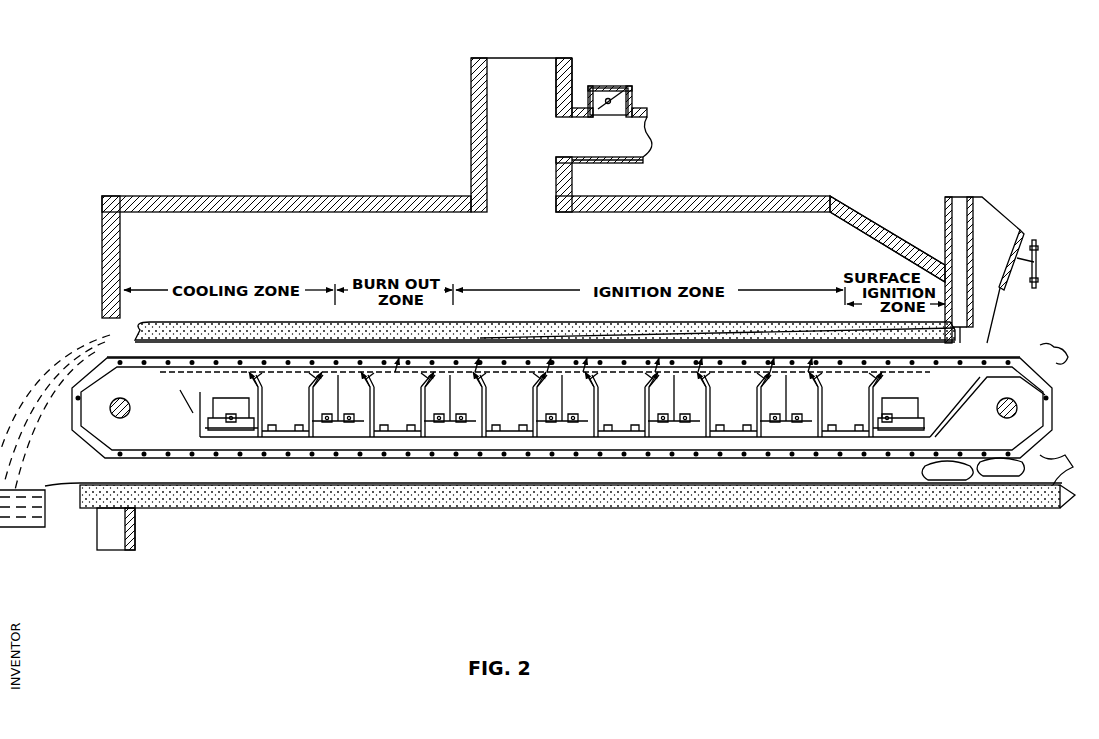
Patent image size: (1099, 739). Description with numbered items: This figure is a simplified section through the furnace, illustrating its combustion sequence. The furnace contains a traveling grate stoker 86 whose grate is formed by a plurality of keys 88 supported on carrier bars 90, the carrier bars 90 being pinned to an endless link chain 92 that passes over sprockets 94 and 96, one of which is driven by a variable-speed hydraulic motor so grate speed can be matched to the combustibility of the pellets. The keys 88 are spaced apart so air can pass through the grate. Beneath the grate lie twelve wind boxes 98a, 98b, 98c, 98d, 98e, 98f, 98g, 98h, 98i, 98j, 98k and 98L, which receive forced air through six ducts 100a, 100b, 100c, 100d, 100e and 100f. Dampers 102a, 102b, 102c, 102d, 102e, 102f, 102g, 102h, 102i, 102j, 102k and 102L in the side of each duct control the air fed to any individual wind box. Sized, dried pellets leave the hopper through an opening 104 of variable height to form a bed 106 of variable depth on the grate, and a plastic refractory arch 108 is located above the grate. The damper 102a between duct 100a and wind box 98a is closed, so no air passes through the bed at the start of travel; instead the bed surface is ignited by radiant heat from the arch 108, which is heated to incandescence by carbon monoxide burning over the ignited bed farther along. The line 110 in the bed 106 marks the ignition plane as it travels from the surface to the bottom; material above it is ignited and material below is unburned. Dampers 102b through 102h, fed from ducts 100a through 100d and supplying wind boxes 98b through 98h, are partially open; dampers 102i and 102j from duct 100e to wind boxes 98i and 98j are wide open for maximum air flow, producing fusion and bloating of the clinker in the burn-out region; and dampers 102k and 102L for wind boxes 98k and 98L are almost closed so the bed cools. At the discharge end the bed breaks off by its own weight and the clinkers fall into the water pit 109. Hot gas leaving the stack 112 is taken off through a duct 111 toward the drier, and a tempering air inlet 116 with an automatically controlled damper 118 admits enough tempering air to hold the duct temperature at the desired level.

The traveling grate stoker 86 is at (1047, 336).
The keys 88 is at (1043, 468).
The carrier bars 90 is at (1048, 440).
The endless link chain 92 is at (1035, 352).
The sprocket 94 is at (138, 433).
The sprocket 96 is at (1010, 430).
The wind box 98a is at (885, 405).
The wind box 98b is at (802, 408).
The wind box 98c is at (773, 408).
The wind box 98d is at (692, 408).
The wind box 98e is at (663, 408).
The wind box 98f is at (579, 408).
The wind box 98g is at (553, 408).
The wind box 98h is at (466, 407).
The wind box 98i is at (439, 408).
The wind box 98j is at (351, 407).
The wind box 98k is at (329, 408).
The wind box 98L is at (244, 418).
The duct 100a is at (847, 407).
The duct 100b is at (735, 407).
The duct 100c is at (623, 407).
The duct 100d is at (511, 407).
The duct 100e is at (399, 407).
The duct 100f is at (287, 407).
The damper 102a is at (874, 380).
The damper 102b is at (822, 385).
The damper 102c is at (764, 378).
The damper 102d is at (730, 370).
The damper 102e is at (652, 378).
The damper 102f is at (609, 374).
The damper 102g is at (540, 378).
The damper 102h is at (499, 375).
The damper 102i is at (428, 378).
The damper 102j is at (410, 370).
The damper 102k is at (316, 378).
The damper 102L is at (276, 382).
The opening 104 is at (975, 330).
The bed 106 is at (484, 322).
The plastic refractory arch 108 is at (872, 238).
The water pit 109 is at (45, 518).
The line 110 is at (500, 330).
The duct 111 is at (615, 163).
The stack 112 is at (574, 70).
The tempering air inlet 116 is at (628, 92).
The damper 118 is at (615, 100).